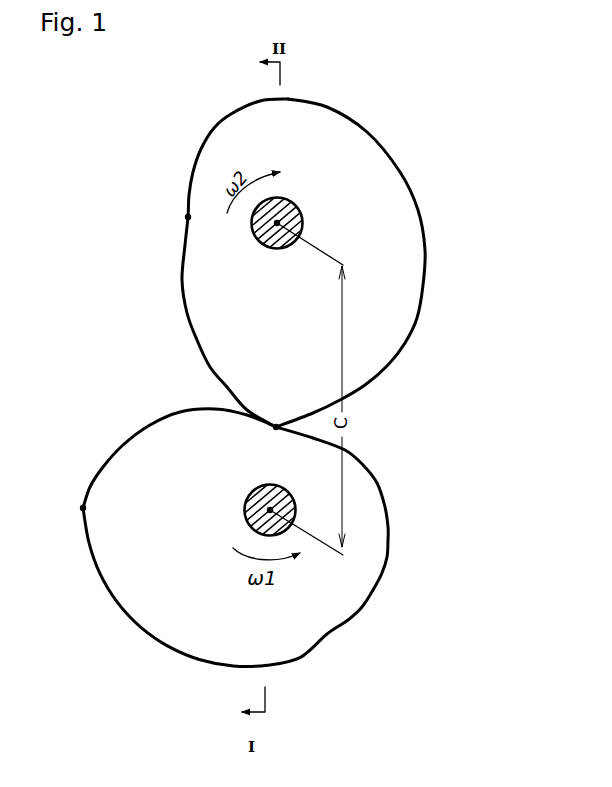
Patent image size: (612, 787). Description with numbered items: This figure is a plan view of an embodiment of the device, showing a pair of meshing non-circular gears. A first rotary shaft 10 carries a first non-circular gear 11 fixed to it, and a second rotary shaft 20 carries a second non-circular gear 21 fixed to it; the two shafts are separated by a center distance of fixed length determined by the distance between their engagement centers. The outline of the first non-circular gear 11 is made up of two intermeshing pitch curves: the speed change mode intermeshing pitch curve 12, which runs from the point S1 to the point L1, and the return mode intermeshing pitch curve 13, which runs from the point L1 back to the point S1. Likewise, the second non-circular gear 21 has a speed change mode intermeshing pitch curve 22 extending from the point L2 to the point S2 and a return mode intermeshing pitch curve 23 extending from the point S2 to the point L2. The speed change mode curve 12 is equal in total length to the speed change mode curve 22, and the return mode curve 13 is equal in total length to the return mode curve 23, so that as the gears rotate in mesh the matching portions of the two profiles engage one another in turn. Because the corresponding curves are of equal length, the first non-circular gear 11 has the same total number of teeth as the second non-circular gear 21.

The first rotary shaft 10 is at (288, 505).
The first non-circular gear 11 is at (231, 557).
The intermeshing pitch curve of the first non-circular gear in the speed change mode 12 is at (303, 653).
The intermeshing pitch curve of the first non-circular gear in the return mode 13 is at (126, 442).
The second rotary shaft 20 is at (289, 211).
The second non-circular gear 21 is at (295, 263).
The intermeshing pitch curve of the second non-circular gear in the speed change mod 22 is at (425, 270).
The intermeshing pitch curve of the second non-circular gear in the return mode 23 is at (182, 280).
The point S1 is at (276, 430).
The point S2 is at (188, 217).
The point L1 is at (83, 508).
The point L2 is at (276, 427).